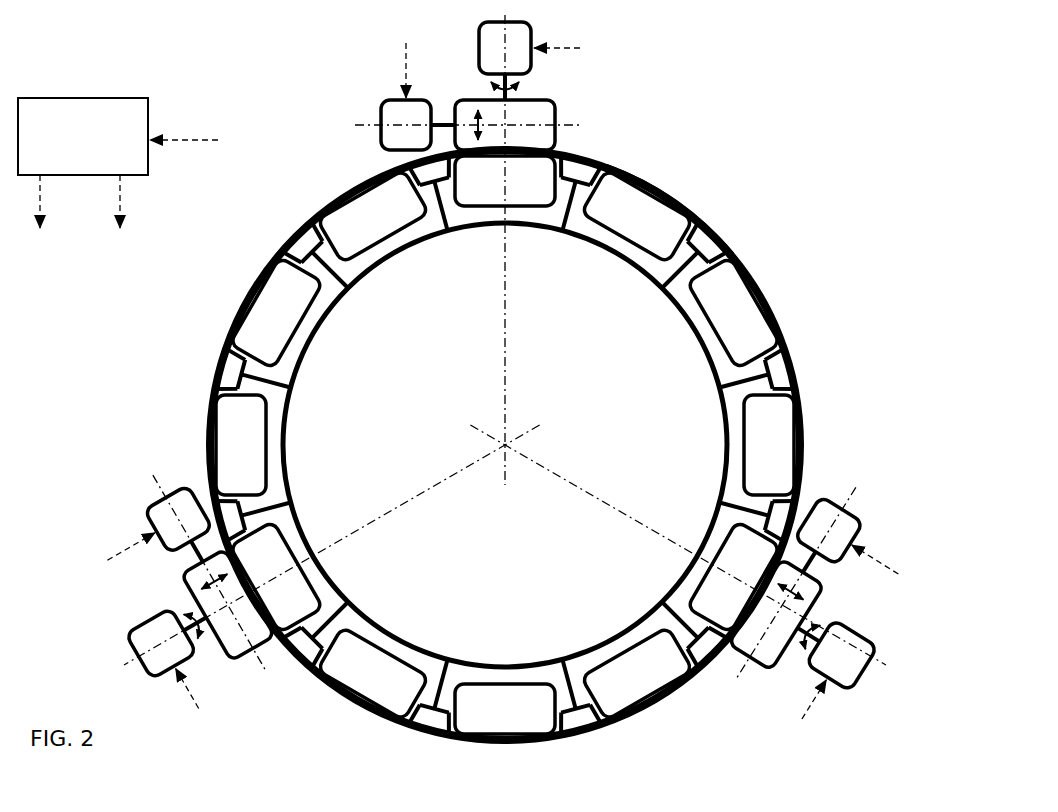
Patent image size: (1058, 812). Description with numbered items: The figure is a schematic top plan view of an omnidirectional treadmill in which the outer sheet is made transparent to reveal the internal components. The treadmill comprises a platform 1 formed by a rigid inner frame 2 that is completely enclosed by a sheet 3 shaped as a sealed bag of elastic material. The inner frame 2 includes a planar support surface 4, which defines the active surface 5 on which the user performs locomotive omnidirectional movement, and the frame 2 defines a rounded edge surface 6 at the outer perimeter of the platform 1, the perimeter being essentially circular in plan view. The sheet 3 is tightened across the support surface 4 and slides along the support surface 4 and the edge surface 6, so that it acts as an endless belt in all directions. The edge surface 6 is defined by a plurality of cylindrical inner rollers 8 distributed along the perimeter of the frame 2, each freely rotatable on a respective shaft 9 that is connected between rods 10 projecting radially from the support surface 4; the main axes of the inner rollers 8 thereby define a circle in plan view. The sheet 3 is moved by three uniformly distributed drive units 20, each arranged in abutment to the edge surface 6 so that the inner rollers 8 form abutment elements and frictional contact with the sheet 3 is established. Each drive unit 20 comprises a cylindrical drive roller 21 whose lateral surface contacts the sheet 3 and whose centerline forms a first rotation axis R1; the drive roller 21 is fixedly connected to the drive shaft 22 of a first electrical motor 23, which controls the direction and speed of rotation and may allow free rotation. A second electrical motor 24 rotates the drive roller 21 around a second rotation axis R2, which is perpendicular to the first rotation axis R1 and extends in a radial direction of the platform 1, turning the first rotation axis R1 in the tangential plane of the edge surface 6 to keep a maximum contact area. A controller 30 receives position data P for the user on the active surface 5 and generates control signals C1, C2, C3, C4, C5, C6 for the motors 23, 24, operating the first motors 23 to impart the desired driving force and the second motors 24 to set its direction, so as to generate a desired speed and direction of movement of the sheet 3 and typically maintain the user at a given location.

The platform 1 is at (506, 403).
The inner frame 2 is at (772, 365).
The sheet 3 is at (687, 205).
The support surface 4 is at (385, 328).
The active surface 5 is at (471, 367).
The edge surface 6 is at (777, 318).
The inner roller 8 is at (632, 205).
The shaft 9 is at (712, 220).
The rod 10 is at (565, 210).
The drive unit 20 is at (486, 372).
The drive roller 21 is at (535, 110).
The drive shaft 22 is at (442, 120).
The first electrical motor 23 is at (381, 115).
The second electrical motor 24 is at (530, 32).
The controller 30 is at (71, 148).
The first rotation axis R1 is at (367, 140).
The second rotation axis R2 is at (510, 325).
The position data P is at (184, 124).
The control signal C1 is at (406, 56).
The control signal C2 is at (580, 46).
The control signal C3 is at (110, 555).
The control signal C4 is at (194, 703).
The control signal C5 is at (892, 571).
The control signal C6 is at (804, 712).